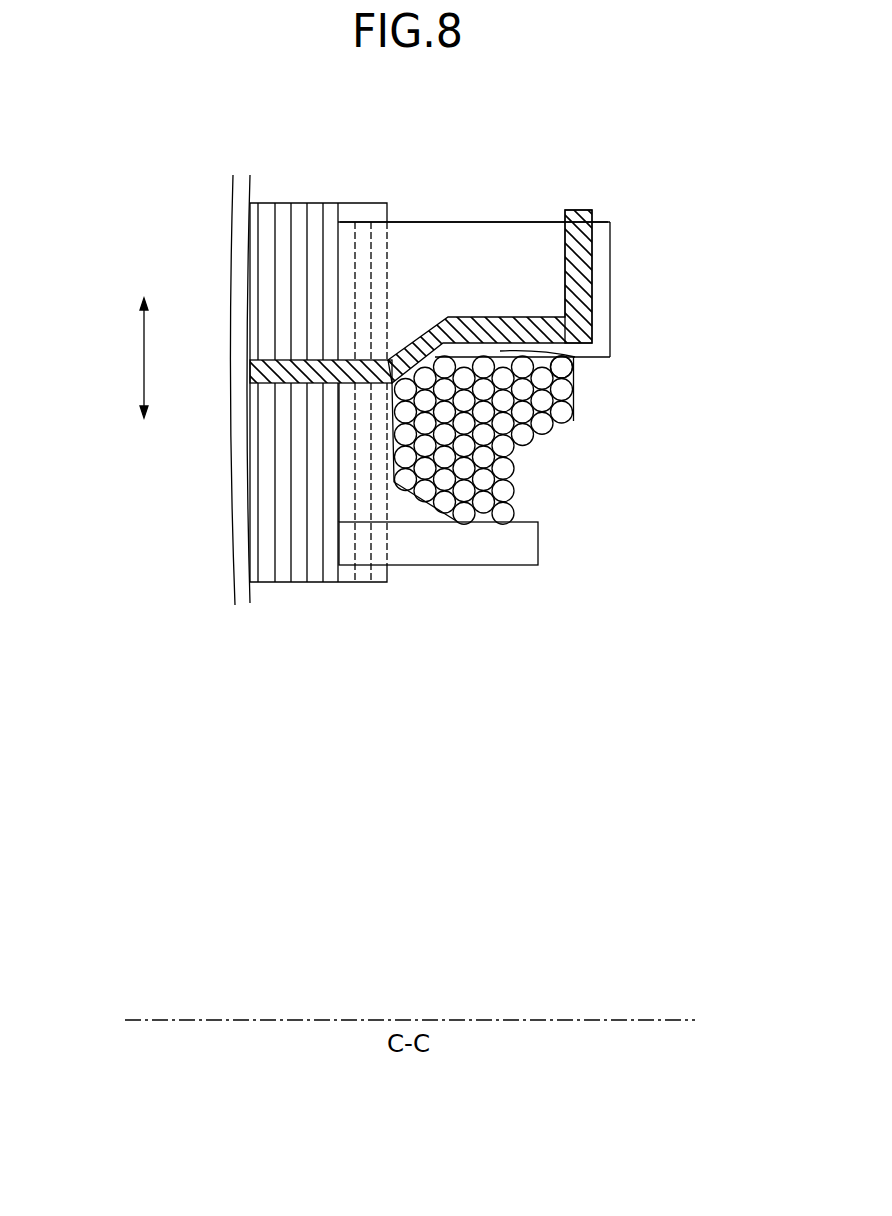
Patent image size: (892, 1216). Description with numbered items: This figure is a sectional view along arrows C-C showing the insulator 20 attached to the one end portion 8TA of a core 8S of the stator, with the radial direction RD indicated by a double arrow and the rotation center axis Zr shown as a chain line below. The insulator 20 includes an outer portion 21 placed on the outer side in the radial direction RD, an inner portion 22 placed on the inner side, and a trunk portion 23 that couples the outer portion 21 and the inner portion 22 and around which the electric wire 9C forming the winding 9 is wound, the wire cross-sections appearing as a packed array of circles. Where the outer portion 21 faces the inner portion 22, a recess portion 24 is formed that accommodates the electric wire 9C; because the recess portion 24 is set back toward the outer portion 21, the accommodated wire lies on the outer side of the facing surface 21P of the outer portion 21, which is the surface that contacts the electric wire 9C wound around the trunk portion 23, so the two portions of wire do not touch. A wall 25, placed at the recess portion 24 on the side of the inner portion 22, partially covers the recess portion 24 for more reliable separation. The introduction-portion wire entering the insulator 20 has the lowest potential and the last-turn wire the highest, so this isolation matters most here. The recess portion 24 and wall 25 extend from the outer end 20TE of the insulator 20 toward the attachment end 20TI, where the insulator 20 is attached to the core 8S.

The core 8S is at (283, 171).
The one end portion of the core 8TA is at (392, 570).
The winding 9 is at (545, 457).
The electric wire 9C is at (582, 210).
The insulator 20 is at (693, 181).
The outer end of the insulator 20TE is at (612, 270).
The attachment end 20TI is at (334, 505).
The outer portion 21 is at (515, 242).
The facing surface 21P is at (605, 362).
The inner portion 22 is at (508, 552).
The trunk portion 23 is at (417, 512).
The recess portion 24 is at (473, 317).
The wall 25 is at (562, 368).
The radial direction RD is at (142, 357).
The rotation center axis Zr is at (423, 1020).